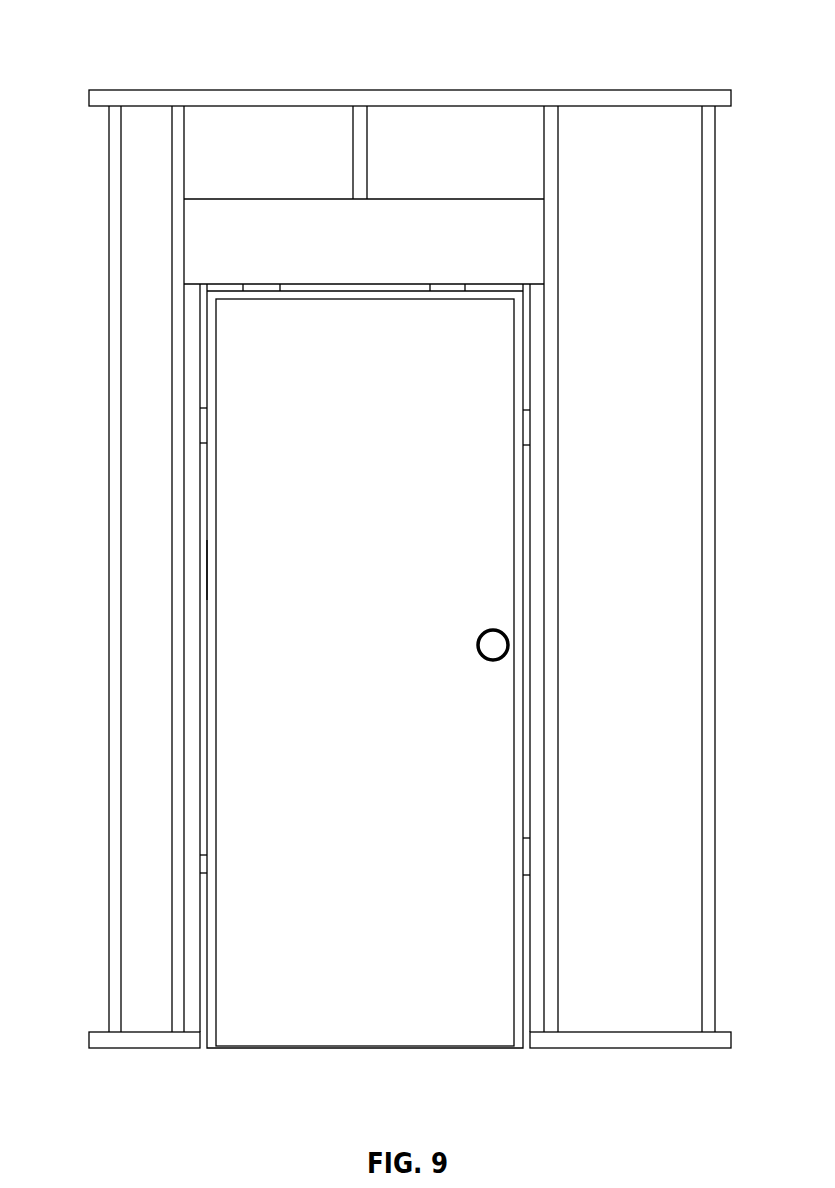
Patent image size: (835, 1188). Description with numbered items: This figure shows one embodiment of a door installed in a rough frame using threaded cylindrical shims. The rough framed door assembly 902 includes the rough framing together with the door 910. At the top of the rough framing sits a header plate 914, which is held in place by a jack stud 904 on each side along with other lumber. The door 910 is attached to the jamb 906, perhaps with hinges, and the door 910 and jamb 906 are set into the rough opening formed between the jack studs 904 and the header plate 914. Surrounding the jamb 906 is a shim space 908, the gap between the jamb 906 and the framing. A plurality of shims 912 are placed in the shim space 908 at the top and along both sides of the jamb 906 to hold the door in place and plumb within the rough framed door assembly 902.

The rough framed door assembly 902 is at (105, 44).
The jack stud 904 is at (195, 468).
The jamb 906 is at (212, 323).
The shim space 908 is at (207, 563).
The door 910 is at (393, 906).
The shims 912 is at (260, 282).
The header plate 914 is at (378, 253).